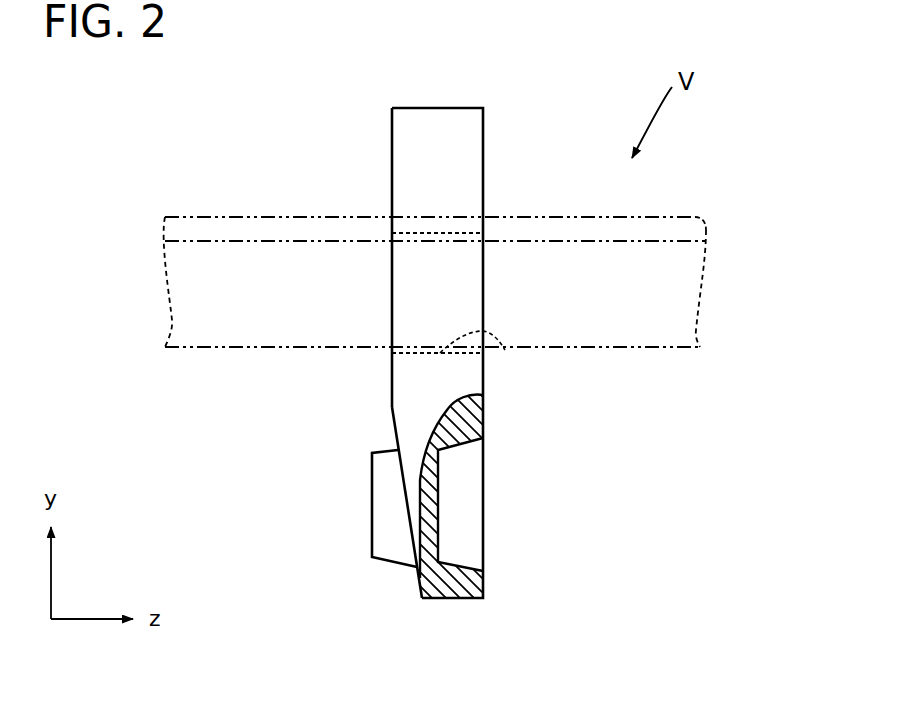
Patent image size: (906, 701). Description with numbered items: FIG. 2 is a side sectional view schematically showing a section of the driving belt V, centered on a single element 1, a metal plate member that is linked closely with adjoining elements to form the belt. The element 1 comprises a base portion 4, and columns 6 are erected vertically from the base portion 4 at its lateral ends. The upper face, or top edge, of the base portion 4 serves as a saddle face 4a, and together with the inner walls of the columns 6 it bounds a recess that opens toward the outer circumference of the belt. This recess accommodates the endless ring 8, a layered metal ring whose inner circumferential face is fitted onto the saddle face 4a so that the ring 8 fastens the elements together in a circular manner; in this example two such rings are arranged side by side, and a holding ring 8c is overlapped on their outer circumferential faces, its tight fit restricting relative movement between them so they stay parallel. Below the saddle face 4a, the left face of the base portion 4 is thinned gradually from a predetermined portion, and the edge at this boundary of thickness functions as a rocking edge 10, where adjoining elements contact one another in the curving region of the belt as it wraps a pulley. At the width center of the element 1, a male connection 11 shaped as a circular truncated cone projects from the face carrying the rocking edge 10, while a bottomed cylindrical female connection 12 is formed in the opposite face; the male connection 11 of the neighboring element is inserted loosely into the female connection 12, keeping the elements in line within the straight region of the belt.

The element 1 is at (370, 178).
The base portion 4 is at (452, 385).
The saddle face 4a is at (505, 350).
The column 6 is at (448, 215).
The ring 8 is at (477, 301).
The holding ring 8c is at (660, 230).
The rocking edge 10 is at (392, 407).
The male connection 11 is at (393, 525).
The female connection 12 is at (472, 524).